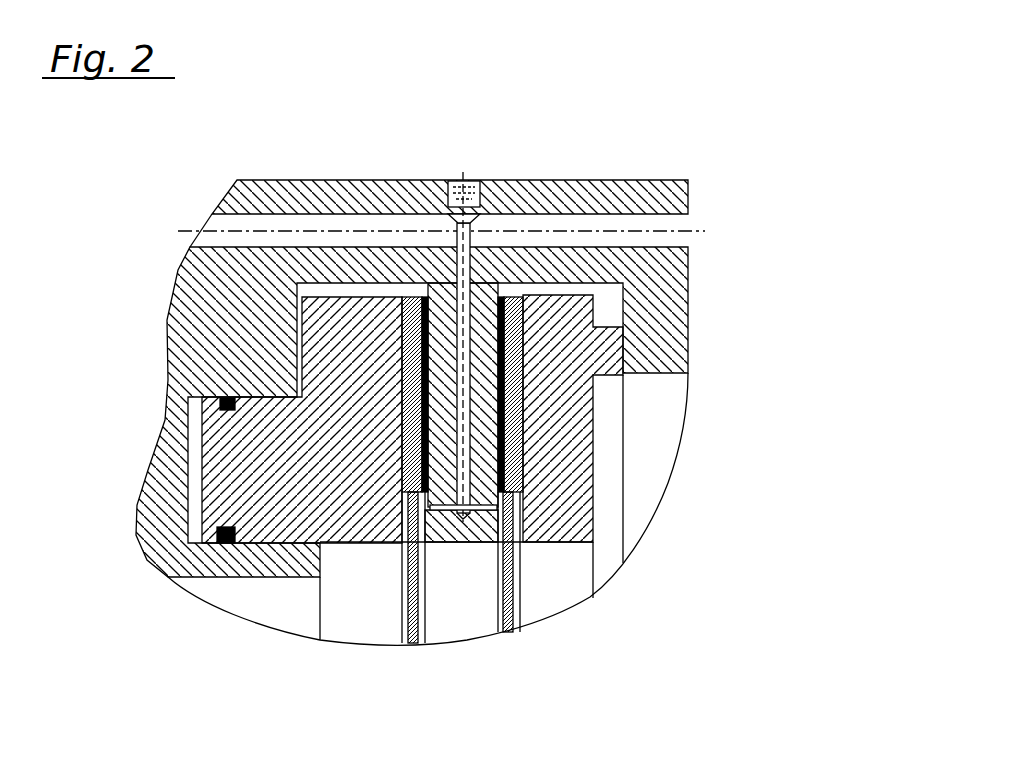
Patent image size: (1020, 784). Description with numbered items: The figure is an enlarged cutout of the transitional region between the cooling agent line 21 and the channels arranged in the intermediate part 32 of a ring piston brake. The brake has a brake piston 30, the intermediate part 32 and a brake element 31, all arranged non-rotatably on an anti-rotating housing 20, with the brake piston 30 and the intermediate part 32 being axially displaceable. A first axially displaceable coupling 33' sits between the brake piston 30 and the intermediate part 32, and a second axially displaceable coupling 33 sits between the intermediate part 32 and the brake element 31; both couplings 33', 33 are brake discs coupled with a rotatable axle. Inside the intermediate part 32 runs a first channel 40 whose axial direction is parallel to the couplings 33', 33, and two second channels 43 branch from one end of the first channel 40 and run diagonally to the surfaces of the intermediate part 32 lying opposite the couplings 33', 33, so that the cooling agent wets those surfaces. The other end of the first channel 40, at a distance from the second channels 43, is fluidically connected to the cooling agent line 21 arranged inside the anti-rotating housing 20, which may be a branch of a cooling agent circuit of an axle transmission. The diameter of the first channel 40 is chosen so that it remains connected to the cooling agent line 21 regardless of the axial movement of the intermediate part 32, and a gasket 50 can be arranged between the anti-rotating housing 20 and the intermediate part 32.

The anti-rotating housing 20 is at (450, 138).
The cooling agent line 21 is at (441, 150).
The brake piston 30 is at (224, 459).
The brake element 31 is at (663, 418).
The intermediate part 32 is at (572, 455).
The second axially displaceable coupling 33 is at (579, 600).
The first axially displaceable coupling 33' is at (336, 600).
The first channel 40 is at (635, 347).
The second channels 43 is at (450, 628).
The gasket 50 is at (500, 283).